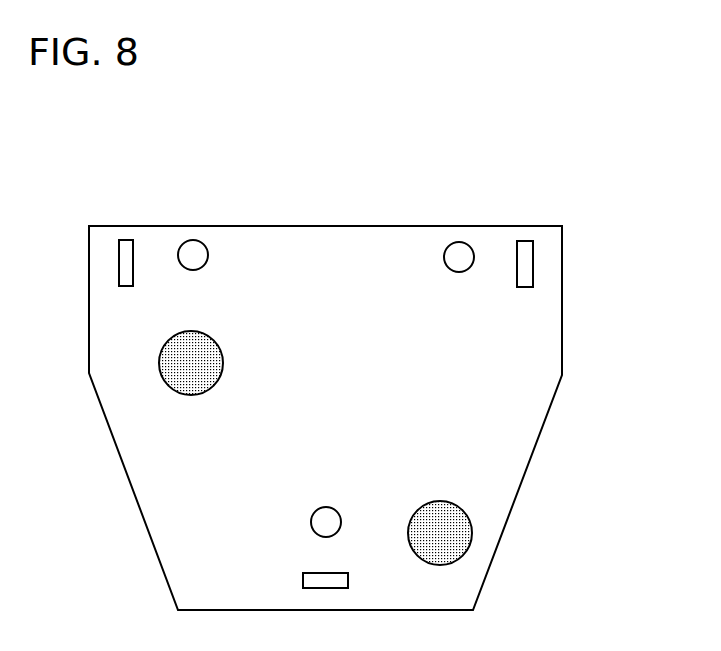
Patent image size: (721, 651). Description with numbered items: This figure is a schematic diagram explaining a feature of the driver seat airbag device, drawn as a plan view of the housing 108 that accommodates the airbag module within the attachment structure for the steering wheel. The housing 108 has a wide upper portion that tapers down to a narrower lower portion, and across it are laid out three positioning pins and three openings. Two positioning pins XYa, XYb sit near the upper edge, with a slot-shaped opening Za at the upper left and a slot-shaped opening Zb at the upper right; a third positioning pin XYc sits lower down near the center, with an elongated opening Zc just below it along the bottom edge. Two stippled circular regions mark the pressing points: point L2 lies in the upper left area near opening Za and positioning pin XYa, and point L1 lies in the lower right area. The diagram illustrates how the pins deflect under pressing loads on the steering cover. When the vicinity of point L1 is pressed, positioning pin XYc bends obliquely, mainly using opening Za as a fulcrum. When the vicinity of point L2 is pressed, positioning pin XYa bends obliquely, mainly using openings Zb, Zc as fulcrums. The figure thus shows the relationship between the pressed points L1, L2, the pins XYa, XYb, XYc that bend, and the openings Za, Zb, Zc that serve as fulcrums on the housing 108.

The housing 108 is at (528, 470).
The opening Za is at (126, 277).
The opening Zb is at (524, 276).
The opening Zc is at (341, 581).
The positioning pin XYa is at (195, 268).
The positioning pin XYb is at (462, 269).
The positioning pin XYc is at (329, 508).
The point L1 is at (440, 533).
The point L2 is at (191, 363).